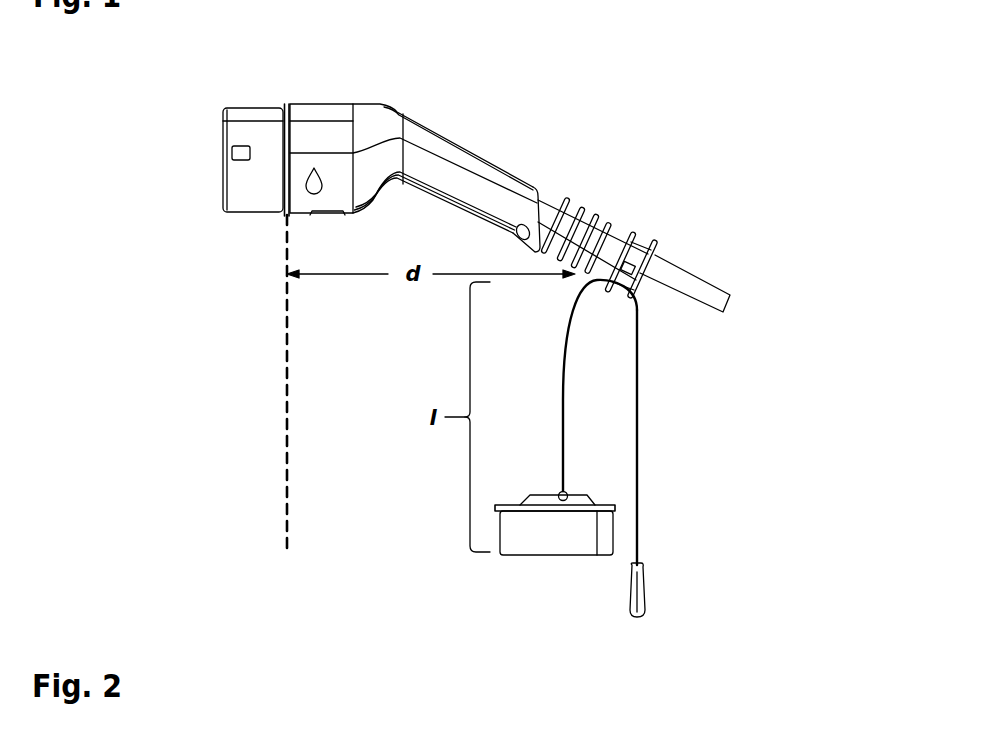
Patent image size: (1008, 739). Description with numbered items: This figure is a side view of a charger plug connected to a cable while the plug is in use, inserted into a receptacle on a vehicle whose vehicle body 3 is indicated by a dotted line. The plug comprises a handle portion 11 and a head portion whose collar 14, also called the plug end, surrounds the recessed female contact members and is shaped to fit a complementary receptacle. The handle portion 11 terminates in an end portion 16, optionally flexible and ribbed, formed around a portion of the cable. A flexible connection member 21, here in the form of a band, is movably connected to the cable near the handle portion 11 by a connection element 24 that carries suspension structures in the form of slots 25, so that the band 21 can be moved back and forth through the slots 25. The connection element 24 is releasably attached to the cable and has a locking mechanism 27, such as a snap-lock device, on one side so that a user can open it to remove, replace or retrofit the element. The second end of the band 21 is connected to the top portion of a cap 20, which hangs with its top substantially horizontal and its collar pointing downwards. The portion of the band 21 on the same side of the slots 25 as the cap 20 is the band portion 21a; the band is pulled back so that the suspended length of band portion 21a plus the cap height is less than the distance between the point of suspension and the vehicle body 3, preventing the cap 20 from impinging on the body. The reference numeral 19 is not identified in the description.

The collar 14 is at (241, 97).
The plug face 19 is at (288, 89).
The handle portion 11 is at (525, 163).
The end portion 16 is at (595, 207).
The connection element 24 is at (656, 230).
The suspension structures 25 is at (625, 298).
The locking mechanism 27 is at (654, 278).
The band portion 21a is at (573, 392).
The flexible connection member 21 is at (650, 512).
The cap 20 is at (525, 575).
The vehicle body 3 is at (296, 473).